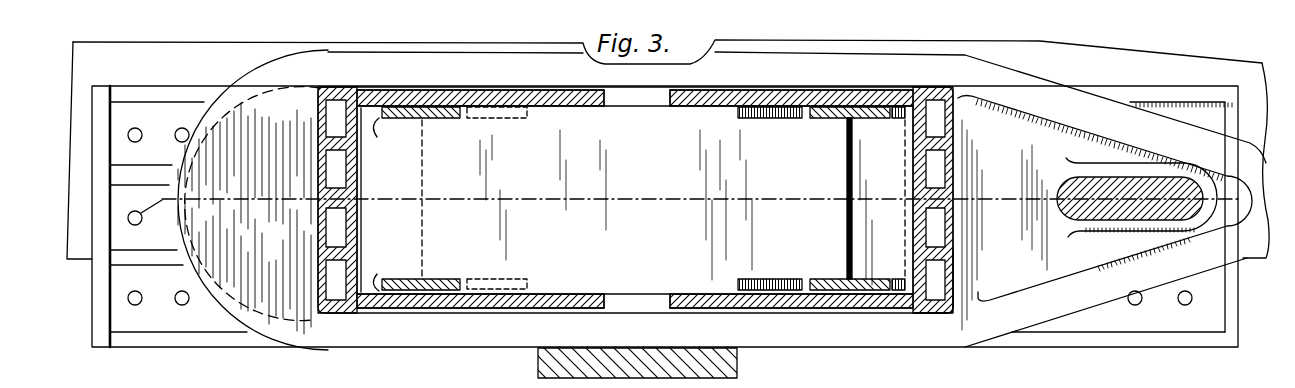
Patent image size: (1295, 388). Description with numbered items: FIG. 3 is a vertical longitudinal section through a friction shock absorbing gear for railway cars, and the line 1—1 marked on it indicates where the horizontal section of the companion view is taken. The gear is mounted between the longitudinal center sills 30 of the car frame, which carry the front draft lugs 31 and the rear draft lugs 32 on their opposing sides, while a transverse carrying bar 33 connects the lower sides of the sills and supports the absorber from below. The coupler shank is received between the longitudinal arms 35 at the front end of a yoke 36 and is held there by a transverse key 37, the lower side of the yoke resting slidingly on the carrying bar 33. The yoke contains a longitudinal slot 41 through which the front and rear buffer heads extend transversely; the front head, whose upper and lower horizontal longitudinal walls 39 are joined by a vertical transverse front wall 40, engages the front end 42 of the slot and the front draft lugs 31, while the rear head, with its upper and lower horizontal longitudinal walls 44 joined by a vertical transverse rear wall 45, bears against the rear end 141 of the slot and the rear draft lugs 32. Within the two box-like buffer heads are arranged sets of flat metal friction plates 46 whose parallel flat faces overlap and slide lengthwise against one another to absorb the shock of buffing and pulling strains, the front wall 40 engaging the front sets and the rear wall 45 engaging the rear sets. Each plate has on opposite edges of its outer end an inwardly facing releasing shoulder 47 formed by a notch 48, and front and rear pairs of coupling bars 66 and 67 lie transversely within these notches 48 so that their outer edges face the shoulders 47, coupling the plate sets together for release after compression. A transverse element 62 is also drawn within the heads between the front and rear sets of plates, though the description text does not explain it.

The section line 1 is at (128, 218).
The longitudinal center sills 30 is at (668, 193).
The front draft lugs 31 is at (1128, 93).
The rear draft lugs 32 is at (665, 216).
The transverse carrying bar 33 is at (737, 361).
The longitudinal arms 35 is at (1105, 213).
The yoke 36 is at (516, 80).
The transverse key 37 is at (1077, 221).
The upper and lower horizontal longitudinal walls 39 is at (781, 305).
The vertical transverse front wall 40 is at (946, 127).
The longitudinal slot 41 is at (751, 87).
The front end of slot 42 is at (952, 270).
The upper and lower horizontal longitudinal walls 44 is at (575, 294).
The vertical transverse rear wall 45 is at (357, 182).
The friction plates 46 is at (676, 207).
The releasing shoulder 47 is at (383, 204).
The notches 48 is at (468, 279).
The partition plate 62 is at (782, 278).
The front coupling bars 66 is at (866, 280).
The rear coupling bars 67 is at (427, 278).
The rear end of slot 141 is at (320, 127).